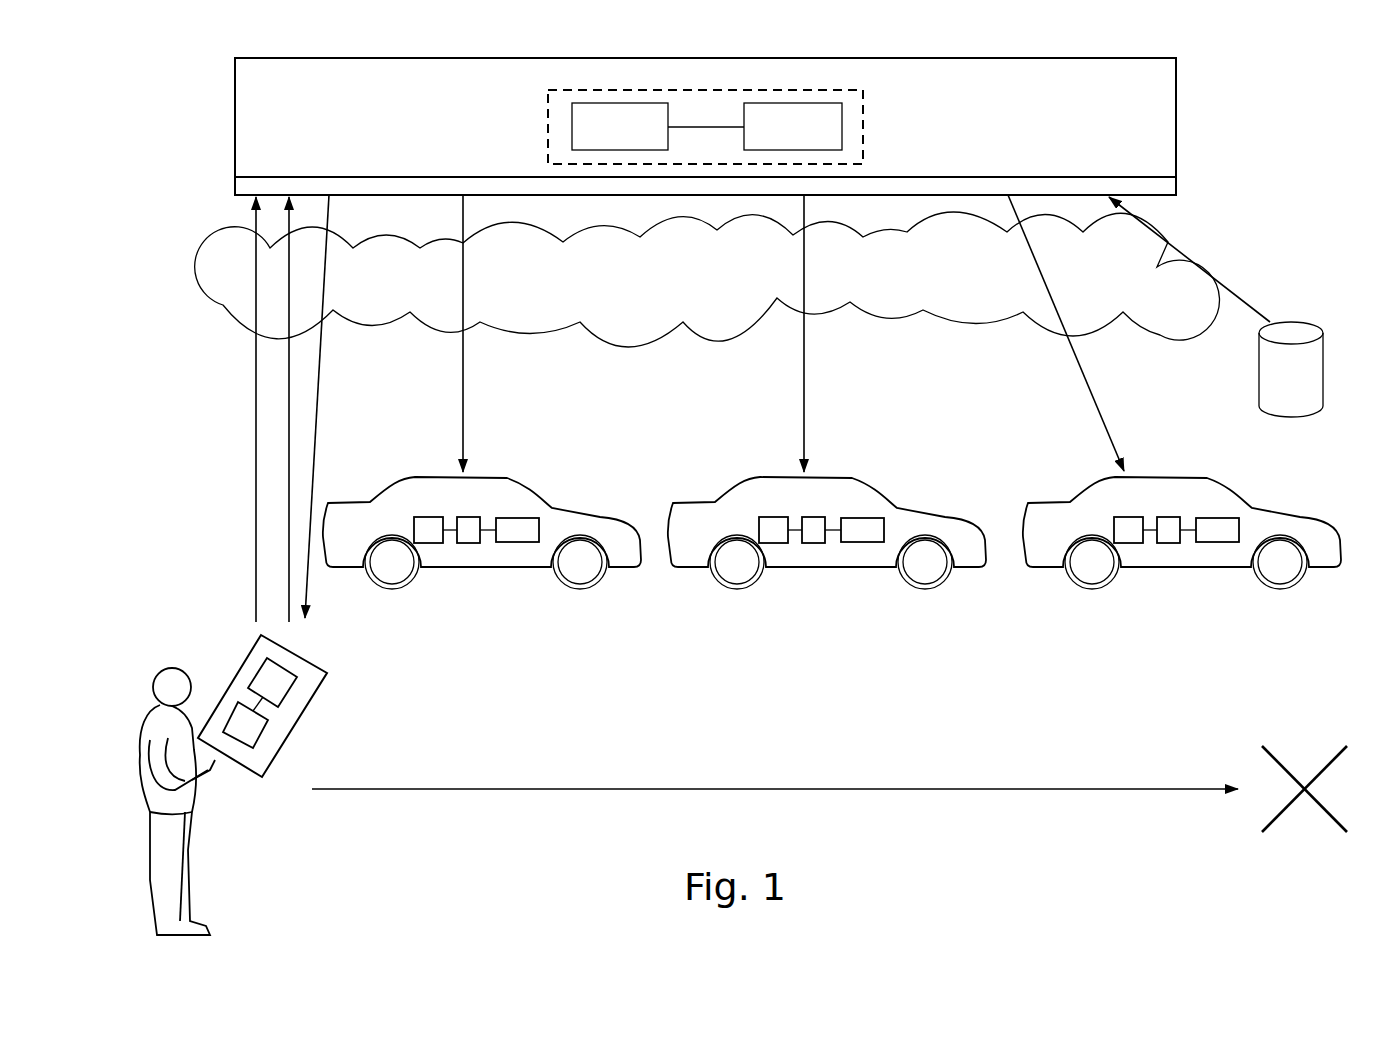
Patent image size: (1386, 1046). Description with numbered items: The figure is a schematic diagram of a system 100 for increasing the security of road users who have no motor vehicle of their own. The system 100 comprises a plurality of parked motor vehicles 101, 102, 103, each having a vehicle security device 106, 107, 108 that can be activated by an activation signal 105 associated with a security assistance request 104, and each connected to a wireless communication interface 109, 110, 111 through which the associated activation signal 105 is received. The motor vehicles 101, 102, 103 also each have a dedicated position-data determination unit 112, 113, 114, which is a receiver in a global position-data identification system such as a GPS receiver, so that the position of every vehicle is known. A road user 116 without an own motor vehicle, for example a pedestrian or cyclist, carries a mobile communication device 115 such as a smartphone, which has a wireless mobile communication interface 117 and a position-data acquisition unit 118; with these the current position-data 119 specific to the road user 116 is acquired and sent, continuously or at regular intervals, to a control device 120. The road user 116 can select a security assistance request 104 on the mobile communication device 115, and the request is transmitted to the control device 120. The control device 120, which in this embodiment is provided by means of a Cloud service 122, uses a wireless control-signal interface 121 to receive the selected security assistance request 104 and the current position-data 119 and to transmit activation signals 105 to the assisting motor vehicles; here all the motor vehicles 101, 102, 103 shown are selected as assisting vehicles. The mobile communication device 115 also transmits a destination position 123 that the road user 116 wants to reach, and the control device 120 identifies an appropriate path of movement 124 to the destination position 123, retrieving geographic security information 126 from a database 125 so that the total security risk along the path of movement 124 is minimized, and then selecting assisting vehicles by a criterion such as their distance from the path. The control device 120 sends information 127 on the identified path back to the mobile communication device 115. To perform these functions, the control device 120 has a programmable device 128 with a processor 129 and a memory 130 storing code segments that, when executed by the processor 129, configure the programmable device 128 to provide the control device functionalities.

The system 100 is at (202, 132).
The motor vehicle 101 is at (487, 470).
The motor vehicle 102 is at (828, 470).
The motor vehicle 103 is at (1186, 476).
The security assistance request 104 is at (252, 380).
The activation signal 105 is at (468, 380).
The vehicle security device 106 is at (515, 545).
The vehicle security device 107 is at (860, 545).
The vehicle security device 108 is at (1215, 545).
The wireless communication interface 109 is at (470, 545).
The wireless communication interface 110 is at (815, 545).
The wireless communication interface 111 is at (1168, 545).
The position-data determination unit 112 is at (430, 545).
The position-data determination unit 113 is at (775, 545).
The position-data determination unit 114 is at (1130, 545).
The mobile communication device 115 is at (242, 663).
The road user 116 is at (190, 832).
The wireless mobile communication interface 117 is at (291, 691).
The position-data acquisition unit 118 is at (264, 737).
The current position-data 119 is at (286, 446).
The control device 120 is at (1182, 124).
The wireless control-signal interface 121 is at (1182, 182).
The Cloud service 122 is at (613, 289).
The destination position 123 is at (1310, 762).
The path of movement 124 is at (957, 795).
The database 125 is at (1302, 323).
The geographic security information 126 is at (1270, 300).
The information on the identified appropriate path of movement 127 is at (322, 380).
The programmable device 128 is at (866, 127).
The processor 129 is at (604, 139).
The memory 130 is at (777, 139).